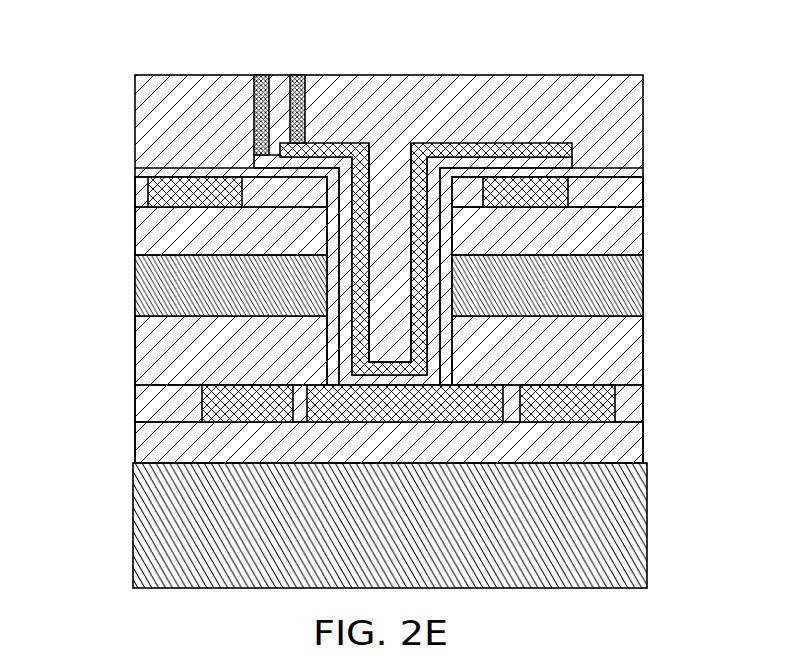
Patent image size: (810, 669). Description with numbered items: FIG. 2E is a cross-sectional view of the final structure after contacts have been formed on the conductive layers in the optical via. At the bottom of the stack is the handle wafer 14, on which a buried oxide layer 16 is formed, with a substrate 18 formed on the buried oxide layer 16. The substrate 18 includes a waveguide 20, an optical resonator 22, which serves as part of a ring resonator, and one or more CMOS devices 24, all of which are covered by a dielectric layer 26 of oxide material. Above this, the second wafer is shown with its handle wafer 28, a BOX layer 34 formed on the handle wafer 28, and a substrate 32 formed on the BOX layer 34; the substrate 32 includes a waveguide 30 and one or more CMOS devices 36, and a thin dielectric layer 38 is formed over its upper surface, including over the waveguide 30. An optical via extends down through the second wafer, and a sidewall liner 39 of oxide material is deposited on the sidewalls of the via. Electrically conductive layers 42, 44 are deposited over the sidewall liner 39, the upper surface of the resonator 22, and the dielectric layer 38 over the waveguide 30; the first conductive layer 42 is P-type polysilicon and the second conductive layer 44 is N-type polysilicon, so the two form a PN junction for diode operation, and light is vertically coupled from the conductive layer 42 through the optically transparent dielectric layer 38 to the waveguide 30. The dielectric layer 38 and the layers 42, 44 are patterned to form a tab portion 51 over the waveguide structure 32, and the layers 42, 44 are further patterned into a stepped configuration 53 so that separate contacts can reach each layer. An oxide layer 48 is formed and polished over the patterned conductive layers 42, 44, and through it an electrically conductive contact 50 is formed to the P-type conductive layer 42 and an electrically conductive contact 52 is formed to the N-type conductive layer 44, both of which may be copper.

The handle wafer 14 is at (632, 542).
The buried oxide (BOX) layer 16 is at (645, 437).
The substrate 18 is at (645, 410).
The waveguide 20 is at (202, 407).
The optical resonator 22 is at (473, 420).
The CMOS devices 24 is at (615, 393).
The dielectric layer 26 is at (623, 348).
The handle wafer 28 is at (632, 290).
The waveguide 30 is at (612, 190).
The substrate 32 is at (643, 198).
The BOX layer 34 is at (643, 218).
The CMOS devices 36 is at (150, 195).
The dielectric layer 38 is at (582, 177).
The sidewall liner 39 is at (440, 160).
The first conductive layer 42 is at (572, 160).
The second conductive layer 44 is at (553, 142).
The oxide layer 48 is at (580, 75).
The electrically conductive contact 50 is at (257, 74).
The tab portion 51 is at (527, 132).
The electrically conductive contact 52 is at (302, 74).
The stepped configuration 53 is at (253, 153).